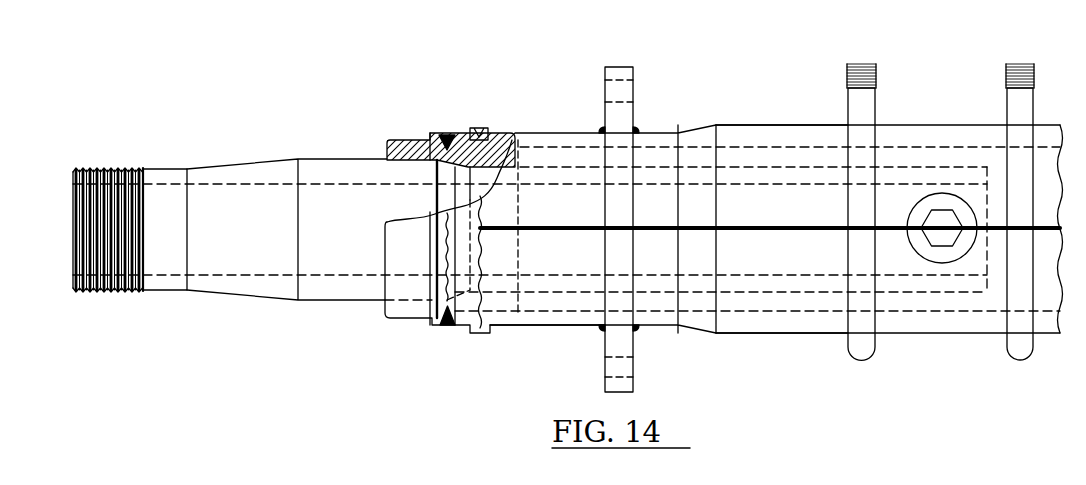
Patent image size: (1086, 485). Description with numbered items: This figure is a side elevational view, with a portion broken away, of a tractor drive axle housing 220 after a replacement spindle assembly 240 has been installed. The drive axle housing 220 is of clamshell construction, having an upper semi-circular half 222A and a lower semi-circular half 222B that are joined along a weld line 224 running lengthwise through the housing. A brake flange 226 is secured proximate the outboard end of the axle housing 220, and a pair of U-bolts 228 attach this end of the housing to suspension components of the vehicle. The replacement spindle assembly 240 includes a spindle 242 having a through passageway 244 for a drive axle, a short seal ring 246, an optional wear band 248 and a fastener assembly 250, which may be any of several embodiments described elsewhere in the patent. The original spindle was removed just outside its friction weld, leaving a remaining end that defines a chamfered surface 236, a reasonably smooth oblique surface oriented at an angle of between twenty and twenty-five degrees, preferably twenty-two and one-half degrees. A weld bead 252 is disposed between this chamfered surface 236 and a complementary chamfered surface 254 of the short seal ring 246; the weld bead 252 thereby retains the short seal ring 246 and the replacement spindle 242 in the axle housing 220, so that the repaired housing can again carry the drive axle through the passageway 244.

The drive axle housing 220 is at (674, 104).
The upper semi-circular half 222A is at (777, 135).
The lower semi-circular half 222B is at (762, 325).
The weld line 224 is at (790, 231).
The brake flange 226 is at (613, 342).
The U-bolts 228 is at (1018, 348).
The chamfered surface 236 is at (463, 139).
The replacement spindle assembly 240 is at (230, 333).
The spindle 242 is at (160, 167).
The through passageway 244 is at (249, 271).
The short seal ring 246 is at (393, 150).
The wear band 248 is at (380, 150).
The fastener assembly 250 is at (942, 116).
The weld bead 252 is at (447, 137).
The complementary chamfered surface 254 is at (442, 140).